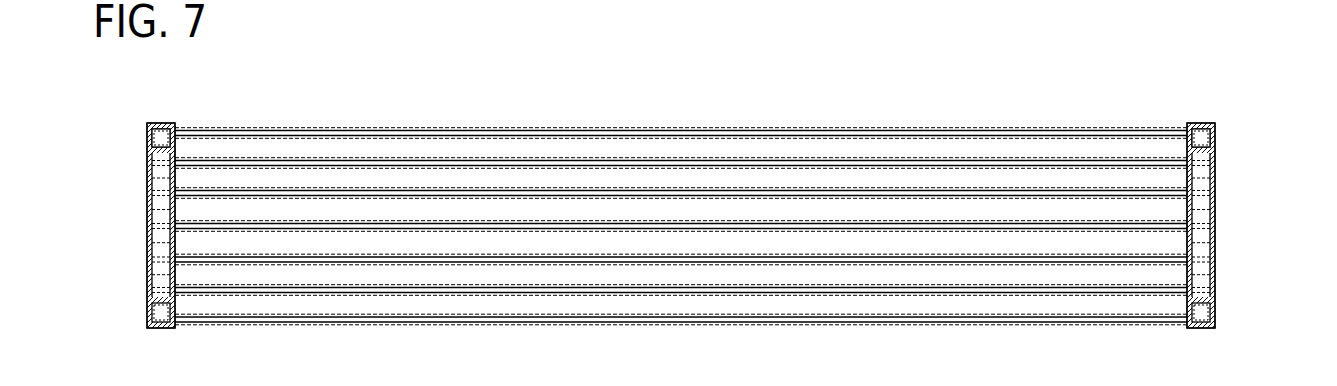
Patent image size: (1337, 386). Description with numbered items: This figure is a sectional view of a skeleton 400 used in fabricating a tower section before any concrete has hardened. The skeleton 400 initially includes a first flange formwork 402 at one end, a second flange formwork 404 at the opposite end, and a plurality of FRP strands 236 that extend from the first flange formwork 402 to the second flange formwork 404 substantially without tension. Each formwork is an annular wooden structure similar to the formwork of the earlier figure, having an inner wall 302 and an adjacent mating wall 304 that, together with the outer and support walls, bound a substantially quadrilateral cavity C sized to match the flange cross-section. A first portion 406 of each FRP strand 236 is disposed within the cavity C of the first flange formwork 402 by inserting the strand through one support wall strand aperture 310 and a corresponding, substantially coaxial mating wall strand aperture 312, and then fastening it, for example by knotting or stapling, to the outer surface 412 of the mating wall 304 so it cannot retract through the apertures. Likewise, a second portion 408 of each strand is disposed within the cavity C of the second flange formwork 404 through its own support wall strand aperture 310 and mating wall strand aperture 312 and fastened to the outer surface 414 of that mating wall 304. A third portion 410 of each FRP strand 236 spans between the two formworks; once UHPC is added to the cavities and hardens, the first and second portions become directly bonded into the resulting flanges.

The skeleton 400 is at (1088, 58).
The first flange formwork 402 is at (116, 131).
The second flange formwork 404 is at (1247, 111).
The inner wall 302 is at (164, 153).
The mating wall 304 is at (133, 327).
The support wall strand aperture 310 is at (185, 283).
The mating wall strand aperture 312 is at (134, 283).
The outer surface of mating wall of first flange formwork 412 is at (147, 215).
The outer surface of mating wall of second flange formwork 414 is at (1216, 211).
The first portion of FRP strand 406 is at (178, 220).
The second portion of FRP strand 408 is at (1187, 217).
The third portion of FRP strand 410 is at (628, 232).
The FRP strands 236 is at (587, 172).
The cavity C is at (182, 131).